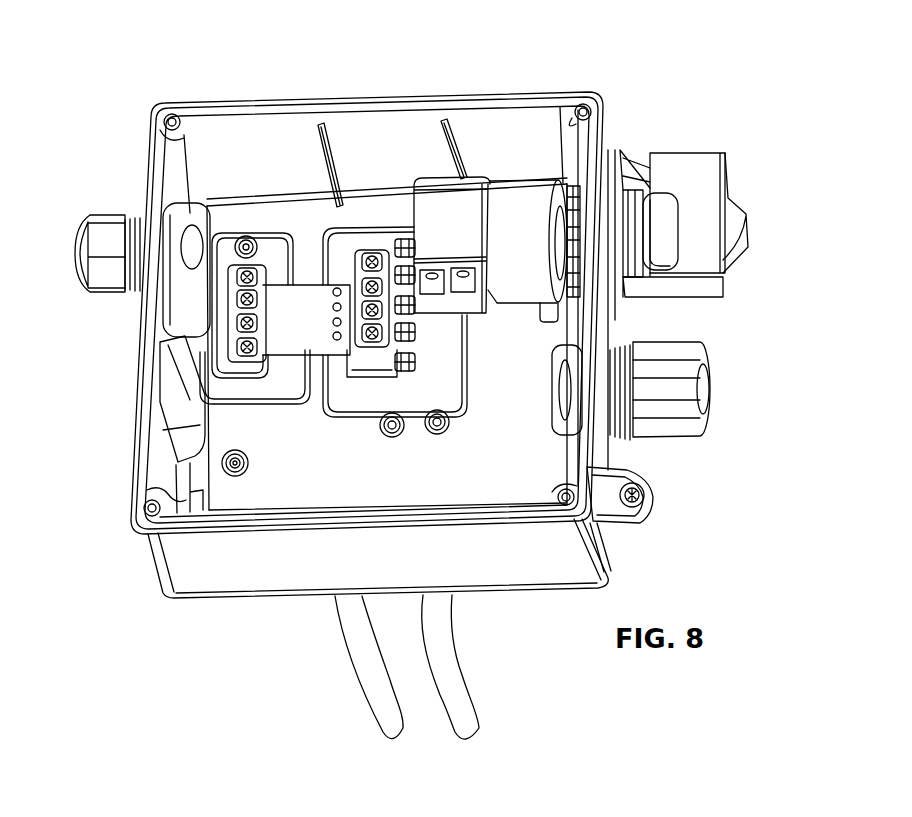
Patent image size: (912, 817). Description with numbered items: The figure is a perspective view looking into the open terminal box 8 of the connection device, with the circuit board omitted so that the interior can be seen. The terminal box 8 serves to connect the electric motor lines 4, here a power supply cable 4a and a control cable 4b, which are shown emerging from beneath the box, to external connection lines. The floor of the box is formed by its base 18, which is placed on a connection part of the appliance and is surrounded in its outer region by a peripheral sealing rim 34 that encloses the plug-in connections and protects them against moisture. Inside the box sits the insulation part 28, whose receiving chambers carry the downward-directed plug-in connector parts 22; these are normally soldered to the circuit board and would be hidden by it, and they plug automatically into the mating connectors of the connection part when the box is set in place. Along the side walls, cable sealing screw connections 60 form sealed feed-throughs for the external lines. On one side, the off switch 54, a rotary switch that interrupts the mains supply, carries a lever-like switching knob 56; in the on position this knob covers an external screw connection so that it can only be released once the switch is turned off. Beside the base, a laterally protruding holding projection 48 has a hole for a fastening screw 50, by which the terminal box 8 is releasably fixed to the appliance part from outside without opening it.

The terminal box 8 is at (131, 577).
The peripheral sealing rim 34 is at (214, 602).
The base 18 is at (324, 474).
The plug-in connector parts 22 is at (265, 287).
The insulation part 28 is at (303, 303).
The off switch 54 is at (567, 170).
The lever-like switching knob 56 is at (693, 172).
The cable sealing screw connection 60 is at (704, 383).
The holding projections 48 is at (622, 520).
The fastening screws 50 is at (648, 488).
The electric motor lines 4 is at (396, 689).
The power supply cable 4a is at (386, 720).
The control cable 4b is at (466, 715).